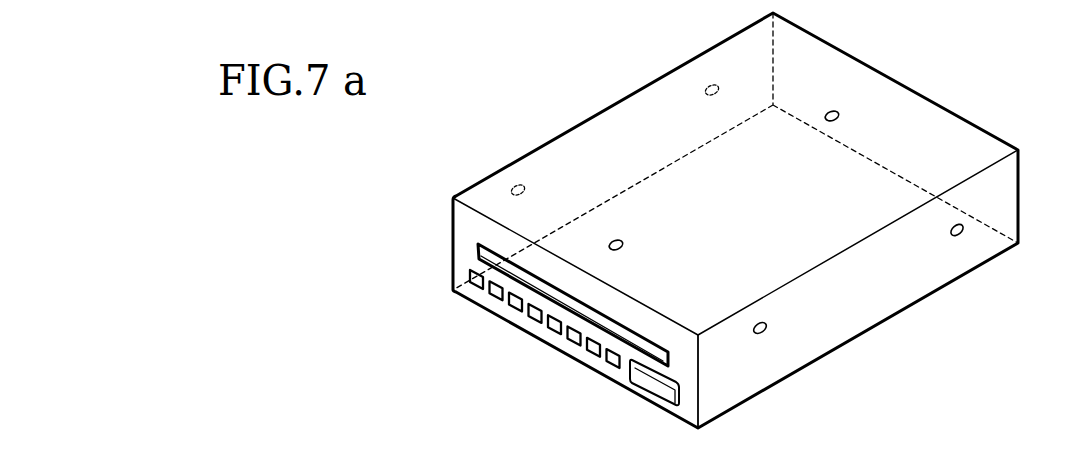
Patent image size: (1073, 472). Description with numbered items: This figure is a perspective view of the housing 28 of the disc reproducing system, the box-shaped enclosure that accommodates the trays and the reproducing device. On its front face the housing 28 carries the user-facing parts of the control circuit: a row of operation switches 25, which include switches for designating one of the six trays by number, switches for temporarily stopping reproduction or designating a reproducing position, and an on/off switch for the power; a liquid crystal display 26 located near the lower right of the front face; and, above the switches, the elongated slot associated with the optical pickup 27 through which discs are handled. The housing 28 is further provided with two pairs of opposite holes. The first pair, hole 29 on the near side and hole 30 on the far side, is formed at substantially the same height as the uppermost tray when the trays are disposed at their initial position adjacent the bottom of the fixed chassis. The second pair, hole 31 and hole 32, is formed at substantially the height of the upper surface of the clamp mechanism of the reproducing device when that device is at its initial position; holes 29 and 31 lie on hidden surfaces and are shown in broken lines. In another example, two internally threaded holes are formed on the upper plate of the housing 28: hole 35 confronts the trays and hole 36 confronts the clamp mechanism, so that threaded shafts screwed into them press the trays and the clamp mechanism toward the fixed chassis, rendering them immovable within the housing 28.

The operation switches 25 is at (509, 300).
The liquid crystal display 26 is at (657, 381).
The optical pickup 27 is at (573, 305).
The housing 28 is at (867, 307).
The hole 29 is at (526, 175).
The hole 30 is at (769, 328).
The hole 31 is at (721, 80).
The hole 32 is at (962, 235).
The hole 35 is at (624, 242).
The hole 36 is at (840, 112).